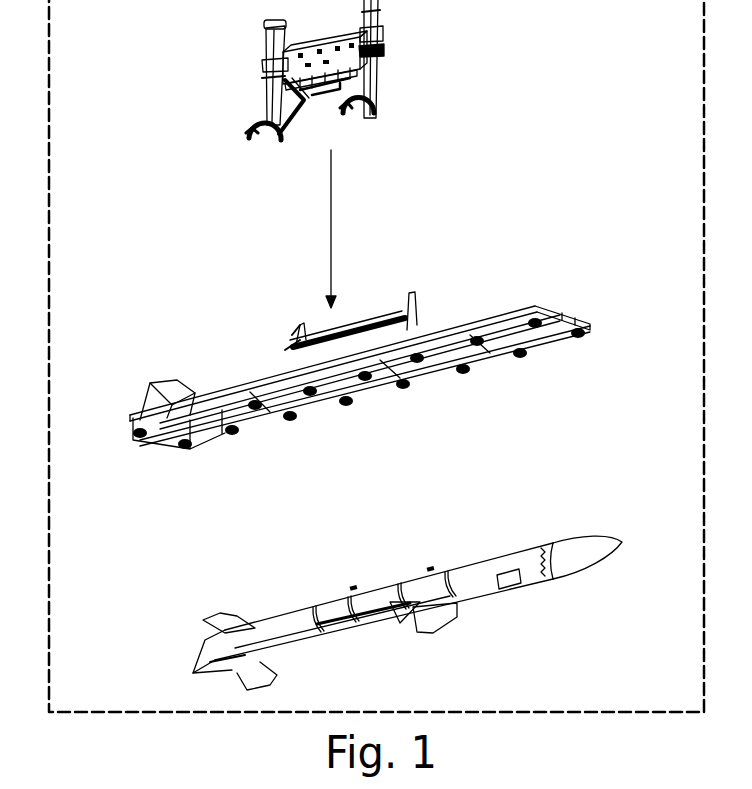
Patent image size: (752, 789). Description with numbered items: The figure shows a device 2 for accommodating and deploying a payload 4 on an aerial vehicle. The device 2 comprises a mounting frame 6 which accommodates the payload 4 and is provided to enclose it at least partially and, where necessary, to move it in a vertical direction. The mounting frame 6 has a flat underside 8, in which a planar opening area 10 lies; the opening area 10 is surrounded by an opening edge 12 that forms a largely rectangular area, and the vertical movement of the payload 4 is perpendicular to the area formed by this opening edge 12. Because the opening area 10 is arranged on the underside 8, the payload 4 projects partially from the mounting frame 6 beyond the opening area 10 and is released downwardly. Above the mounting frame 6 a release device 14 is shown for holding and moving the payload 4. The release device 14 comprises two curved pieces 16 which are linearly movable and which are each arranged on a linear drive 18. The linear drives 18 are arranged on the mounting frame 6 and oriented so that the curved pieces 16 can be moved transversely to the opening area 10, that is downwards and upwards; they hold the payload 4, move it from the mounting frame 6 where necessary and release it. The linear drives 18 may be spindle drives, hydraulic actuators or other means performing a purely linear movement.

The device 2 is at (376, 345).
The payload 4 is at (527, 567).
The mounting frame 6 is at (360, 382).
The flat underside 8 is at (215, 443).
The planar opening area 10 is at (434, 360).
The opening edge 12 is at (498, 358).
The release device 14 is at (337, 87).
The curved pieces 16 is at (251, 127).
The linear drives 18 is at (264, 44).